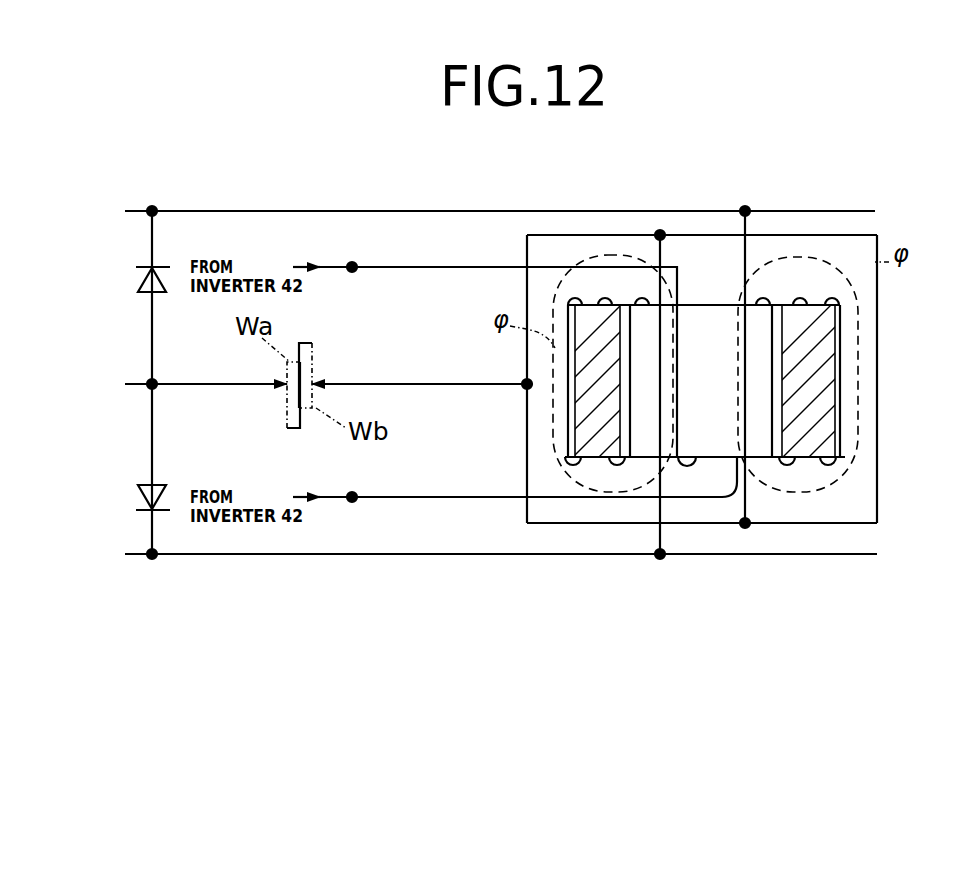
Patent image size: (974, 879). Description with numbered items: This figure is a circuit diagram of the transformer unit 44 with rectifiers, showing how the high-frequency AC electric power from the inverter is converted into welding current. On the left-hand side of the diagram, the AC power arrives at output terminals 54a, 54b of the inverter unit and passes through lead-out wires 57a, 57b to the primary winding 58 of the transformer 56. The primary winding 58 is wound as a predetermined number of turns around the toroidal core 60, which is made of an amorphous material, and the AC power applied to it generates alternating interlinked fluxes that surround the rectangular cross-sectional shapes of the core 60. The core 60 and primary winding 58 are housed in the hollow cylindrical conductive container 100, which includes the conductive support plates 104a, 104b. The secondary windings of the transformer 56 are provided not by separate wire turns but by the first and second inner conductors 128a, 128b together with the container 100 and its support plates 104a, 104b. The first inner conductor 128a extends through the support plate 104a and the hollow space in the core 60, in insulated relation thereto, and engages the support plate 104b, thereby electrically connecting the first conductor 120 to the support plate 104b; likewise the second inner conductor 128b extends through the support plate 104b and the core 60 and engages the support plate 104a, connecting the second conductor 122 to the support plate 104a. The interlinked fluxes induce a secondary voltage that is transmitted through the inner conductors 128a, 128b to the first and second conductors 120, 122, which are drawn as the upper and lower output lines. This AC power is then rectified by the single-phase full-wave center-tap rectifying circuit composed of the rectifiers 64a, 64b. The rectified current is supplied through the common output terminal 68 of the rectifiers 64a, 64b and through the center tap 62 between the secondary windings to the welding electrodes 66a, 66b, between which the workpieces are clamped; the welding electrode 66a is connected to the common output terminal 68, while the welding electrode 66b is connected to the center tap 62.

The transformer unit 44 is at (528, 147).
The output terminal 54a is at (352, 267).
The output terminal 54b is at (352, 497).
The transformer 56 is at (880, 318).
The lead-out wire 57a is at (440, 269).
The lead-out wire 57b is at (440, 499).
The primary winding 58 is at (842, 410).
The core 60 is at (828, 357).
The center tap 62 is at (525, 390).
The rectifier 64a is at (140, 284).
The rectifier 64b is at (140, 480).
The welding electrode 66a is at (287, 390).
The welding electrode 66b is at (318, 380).
The common output terminal 68 is at (155, 382).
The conductive container 100 is at (880, 462).
The support plate 104a is at (850, 235).
The support plate 104b is at (866, 524).
The first conductor 120 is at (776, 211).
The second conductor 122 is at (785, 554).
The first inner joint conductor 128a is at (742, 224).
The second inner joint conductor 128b is at (664, 556).